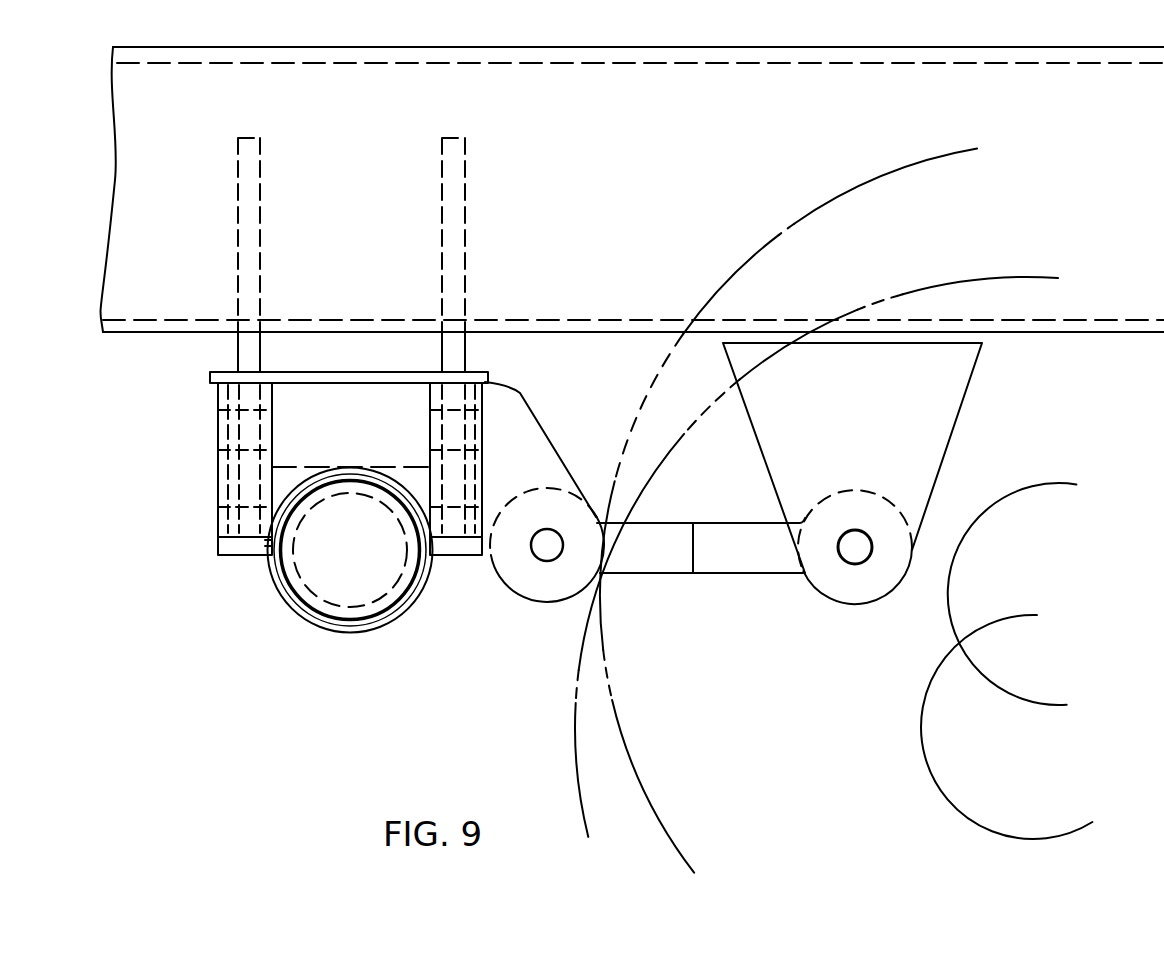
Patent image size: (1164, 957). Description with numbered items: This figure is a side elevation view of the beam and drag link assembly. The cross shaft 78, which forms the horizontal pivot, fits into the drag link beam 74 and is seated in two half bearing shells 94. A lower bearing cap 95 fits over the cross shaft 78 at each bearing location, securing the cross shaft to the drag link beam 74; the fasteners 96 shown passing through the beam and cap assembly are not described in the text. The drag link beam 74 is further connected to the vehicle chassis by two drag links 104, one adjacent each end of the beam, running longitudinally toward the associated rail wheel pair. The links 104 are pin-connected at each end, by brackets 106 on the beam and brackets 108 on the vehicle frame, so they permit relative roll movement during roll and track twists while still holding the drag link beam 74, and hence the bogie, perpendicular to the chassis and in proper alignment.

The drag link beam 74 is at (317, 428).
The cross shaft 78 is at (415, 583).
The half bearing shells 94 is at (272, 547).
The lower bearing cap 95 is at (333, 622).
The posts 96 is at (460, 343).
The drag links 104 is at (630, 540).
The brackets 106 is at (524, 458).
The brackets 108 is at (806, 433).